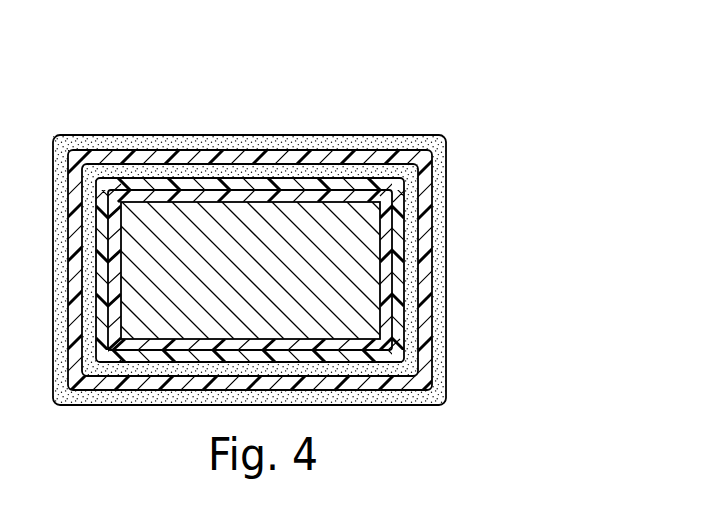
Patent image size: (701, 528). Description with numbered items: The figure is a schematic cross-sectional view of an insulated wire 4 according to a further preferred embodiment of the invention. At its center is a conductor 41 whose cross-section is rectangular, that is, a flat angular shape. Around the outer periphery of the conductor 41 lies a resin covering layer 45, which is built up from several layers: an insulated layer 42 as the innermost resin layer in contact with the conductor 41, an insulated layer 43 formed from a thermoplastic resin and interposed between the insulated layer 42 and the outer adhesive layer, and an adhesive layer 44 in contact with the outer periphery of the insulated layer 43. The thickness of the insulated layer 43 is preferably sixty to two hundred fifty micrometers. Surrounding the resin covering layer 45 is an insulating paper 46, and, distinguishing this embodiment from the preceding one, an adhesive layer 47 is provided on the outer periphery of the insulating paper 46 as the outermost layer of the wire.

The insulated wire 4 is at (342, 231).
The conductor 41 is at (356, 228).
The insulated layer 42 is at (387, 240).
The insulated layer 43 is at (401, 272).
The adhesive layer 44 is at (410, 294).
The resin covering layer 45 is at (357, 270).
The insulating paper 46 is at (420, 338).
The adhesive layer 47 is at (437, 372).